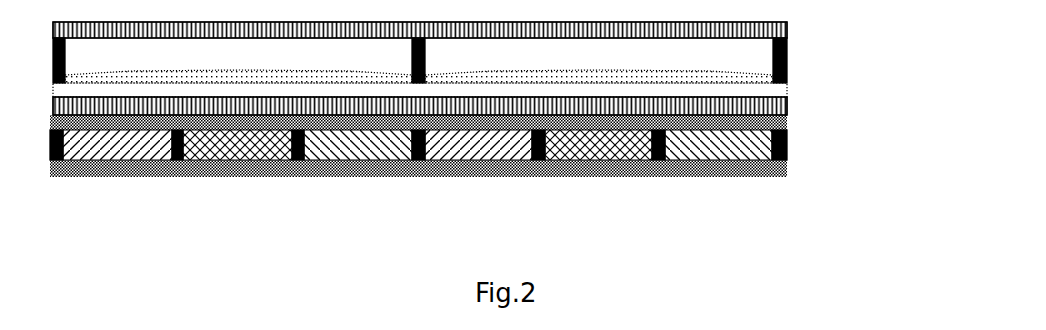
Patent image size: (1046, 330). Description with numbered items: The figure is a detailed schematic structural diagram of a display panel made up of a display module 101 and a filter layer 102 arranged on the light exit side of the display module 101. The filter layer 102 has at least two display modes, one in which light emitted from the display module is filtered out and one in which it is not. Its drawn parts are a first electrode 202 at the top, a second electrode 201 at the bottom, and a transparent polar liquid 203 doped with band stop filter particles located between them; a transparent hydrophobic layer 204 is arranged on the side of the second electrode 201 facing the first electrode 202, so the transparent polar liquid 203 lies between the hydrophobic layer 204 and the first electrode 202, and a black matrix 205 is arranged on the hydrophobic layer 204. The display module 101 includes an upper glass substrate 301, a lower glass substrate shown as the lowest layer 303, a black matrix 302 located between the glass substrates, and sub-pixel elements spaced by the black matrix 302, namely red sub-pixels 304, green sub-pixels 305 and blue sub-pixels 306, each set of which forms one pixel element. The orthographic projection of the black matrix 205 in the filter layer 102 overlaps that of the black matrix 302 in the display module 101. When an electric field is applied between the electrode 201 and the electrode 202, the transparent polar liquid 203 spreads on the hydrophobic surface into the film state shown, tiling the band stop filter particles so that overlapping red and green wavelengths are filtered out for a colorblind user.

The display module 101 is at (499, 163).
The filter layer 102 is at (501, 68).
The second electrode 201 is at (788, 107).
The first electrode 202 is at (788, 29).
The transparent polar liquid 203 is at (707, 72).
The transparent hydrophobic layer 204 is at (788, 88).
The black matrix 205 is at (788, 47).
The upper glass substrate 301 is at (788, 125).
The black matrix 302 is at (461, 171).
The base substrate 303 is at (788, 167).
The red sub-pixels 304 is at (463, 160).
The green sub-pixels 305 is at (590, 160).
The blue sub-pixels 306 is at (707, 160).